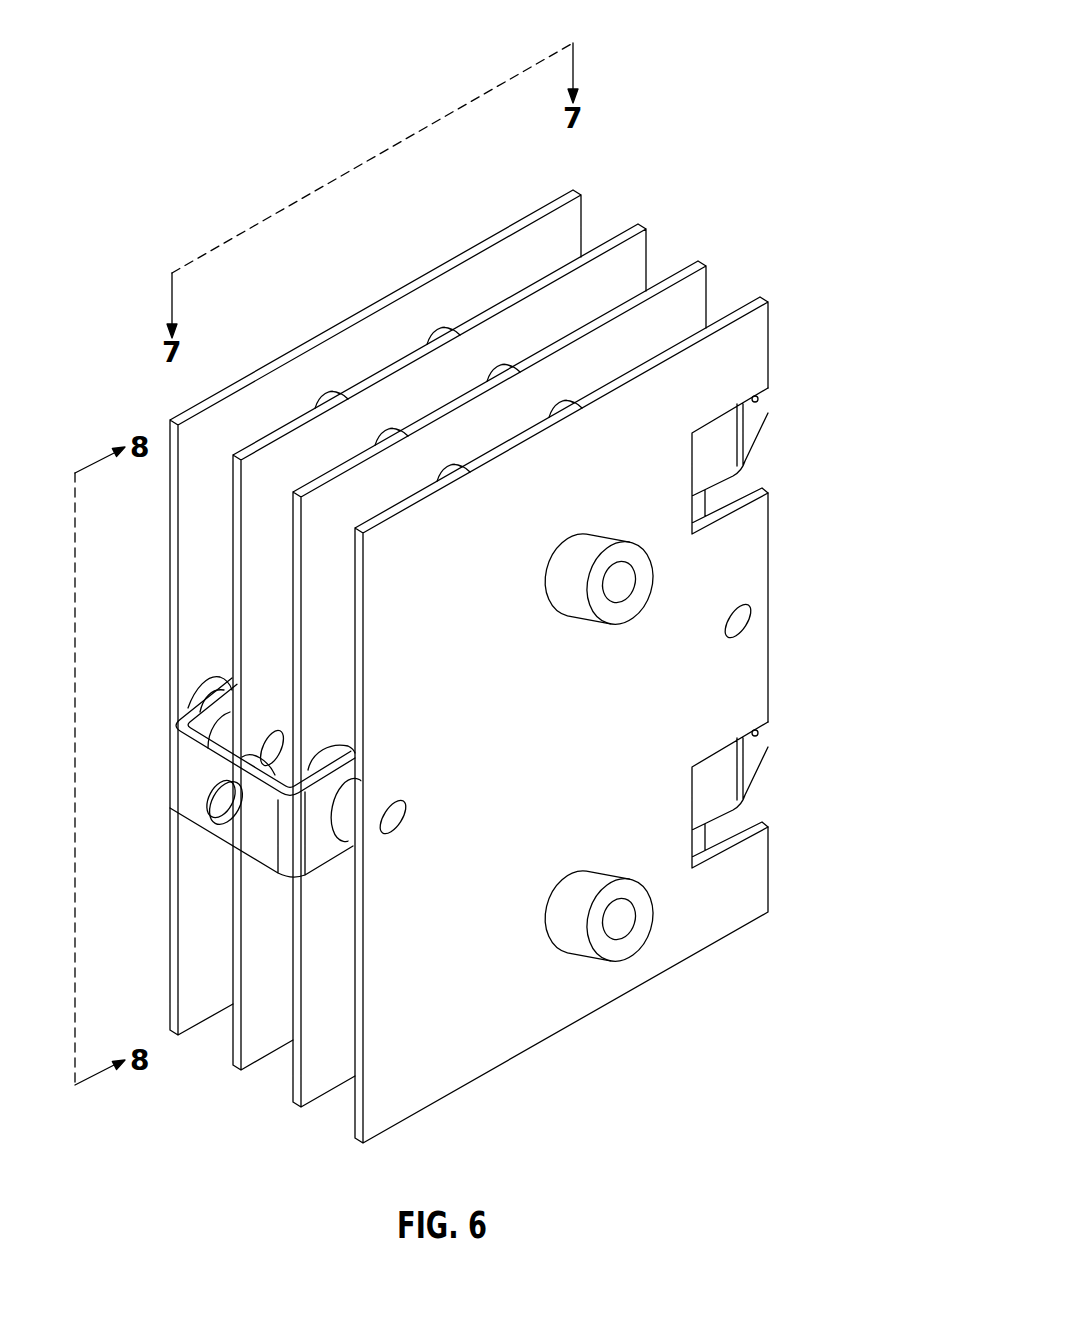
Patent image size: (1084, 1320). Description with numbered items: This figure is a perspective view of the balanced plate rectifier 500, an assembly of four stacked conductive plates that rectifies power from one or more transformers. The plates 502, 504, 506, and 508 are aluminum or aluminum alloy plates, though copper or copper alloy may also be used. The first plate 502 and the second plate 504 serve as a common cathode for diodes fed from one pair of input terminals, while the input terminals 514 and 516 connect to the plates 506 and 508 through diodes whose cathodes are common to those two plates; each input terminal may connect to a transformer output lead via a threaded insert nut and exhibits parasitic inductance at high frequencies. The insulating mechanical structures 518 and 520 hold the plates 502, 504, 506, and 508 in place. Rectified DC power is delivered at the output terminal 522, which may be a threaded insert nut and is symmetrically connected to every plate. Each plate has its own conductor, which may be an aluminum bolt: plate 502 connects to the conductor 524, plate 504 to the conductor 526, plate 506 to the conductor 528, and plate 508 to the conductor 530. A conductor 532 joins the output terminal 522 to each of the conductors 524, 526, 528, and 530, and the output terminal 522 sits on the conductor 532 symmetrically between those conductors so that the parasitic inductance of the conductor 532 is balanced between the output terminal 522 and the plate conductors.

The balanced plate rectifier 500 is at (830, 36).
The first plate 502 is at (580, 211).
The second plate 504 is at (641, 249).
The plate 506 is at (703, 286).
The plate 508 is at (769, 323).
The input terminal 514 is at (748, 413).
The input terminal 516 is at (748, 752).
The mechanical structure 518 is at (577, 598).
The mechanical structure 520 is at (563, 920).
The output terminal 522 is at (223, 812).
The conductor 524 is at (222, 673).
The conductor 526 is at (200, 697).
The conductor 528 is at (348, 744).
The conductor 530 is at (347, 830).
The conductor 532 is at (186, 779).